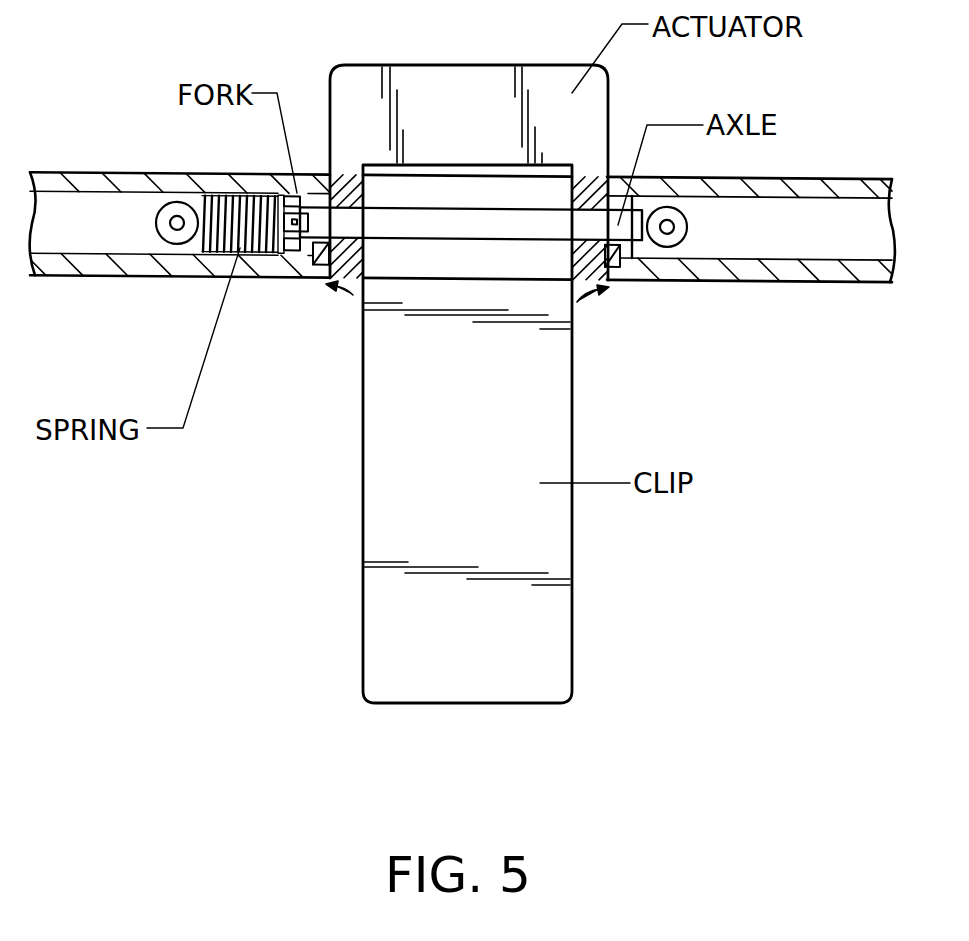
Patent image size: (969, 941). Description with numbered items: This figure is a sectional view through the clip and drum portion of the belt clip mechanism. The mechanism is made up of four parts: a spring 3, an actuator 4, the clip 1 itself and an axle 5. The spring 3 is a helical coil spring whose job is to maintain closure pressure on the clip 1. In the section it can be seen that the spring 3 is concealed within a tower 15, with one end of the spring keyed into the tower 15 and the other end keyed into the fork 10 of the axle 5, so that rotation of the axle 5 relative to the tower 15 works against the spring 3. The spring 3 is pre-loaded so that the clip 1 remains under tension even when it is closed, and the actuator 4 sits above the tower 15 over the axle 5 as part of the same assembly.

The clip 1 is at (548, 658).
The spring 3 is at (236, 251).
The actuator 4 is at (490, 65).
The axle 5 is at (397, 228).
The fork 10 is at (312, 262).
The tower 15 is at (138, 171).